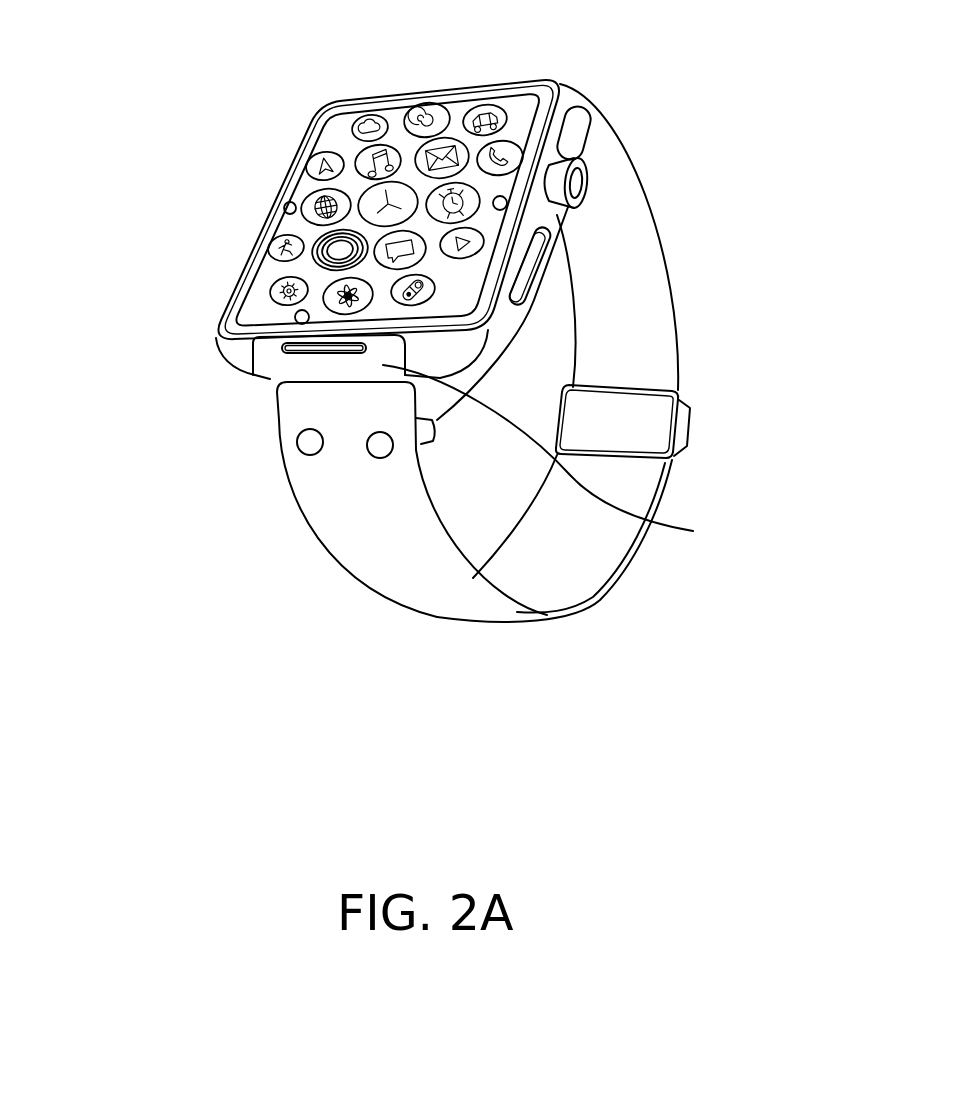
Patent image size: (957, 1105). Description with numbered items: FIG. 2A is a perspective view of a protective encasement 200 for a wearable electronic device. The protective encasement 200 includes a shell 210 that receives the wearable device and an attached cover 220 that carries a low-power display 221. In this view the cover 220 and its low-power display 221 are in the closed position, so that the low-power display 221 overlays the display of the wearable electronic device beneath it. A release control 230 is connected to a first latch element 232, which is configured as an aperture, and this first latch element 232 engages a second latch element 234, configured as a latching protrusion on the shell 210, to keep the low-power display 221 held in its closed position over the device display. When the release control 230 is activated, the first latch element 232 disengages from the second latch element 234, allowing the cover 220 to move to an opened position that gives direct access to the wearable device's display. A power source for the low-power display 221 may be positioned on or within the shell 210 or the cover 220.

The protective encasement 200 is at (170, 52).
The shell 210 is at (503, 335).
The cover 220 is at (558, 86).
The low-power display 221 is at (400, 138).
The release control 230 is at (640, 520).
The first latch element 232 is at (281, 354).
The second latch element 234 is at (318, 351).